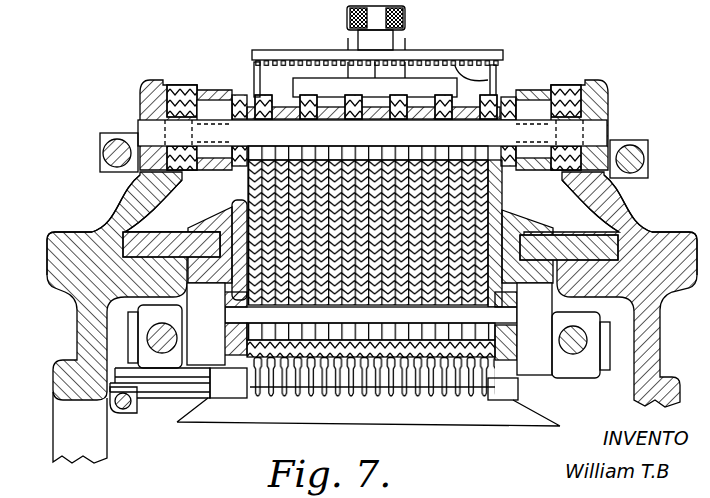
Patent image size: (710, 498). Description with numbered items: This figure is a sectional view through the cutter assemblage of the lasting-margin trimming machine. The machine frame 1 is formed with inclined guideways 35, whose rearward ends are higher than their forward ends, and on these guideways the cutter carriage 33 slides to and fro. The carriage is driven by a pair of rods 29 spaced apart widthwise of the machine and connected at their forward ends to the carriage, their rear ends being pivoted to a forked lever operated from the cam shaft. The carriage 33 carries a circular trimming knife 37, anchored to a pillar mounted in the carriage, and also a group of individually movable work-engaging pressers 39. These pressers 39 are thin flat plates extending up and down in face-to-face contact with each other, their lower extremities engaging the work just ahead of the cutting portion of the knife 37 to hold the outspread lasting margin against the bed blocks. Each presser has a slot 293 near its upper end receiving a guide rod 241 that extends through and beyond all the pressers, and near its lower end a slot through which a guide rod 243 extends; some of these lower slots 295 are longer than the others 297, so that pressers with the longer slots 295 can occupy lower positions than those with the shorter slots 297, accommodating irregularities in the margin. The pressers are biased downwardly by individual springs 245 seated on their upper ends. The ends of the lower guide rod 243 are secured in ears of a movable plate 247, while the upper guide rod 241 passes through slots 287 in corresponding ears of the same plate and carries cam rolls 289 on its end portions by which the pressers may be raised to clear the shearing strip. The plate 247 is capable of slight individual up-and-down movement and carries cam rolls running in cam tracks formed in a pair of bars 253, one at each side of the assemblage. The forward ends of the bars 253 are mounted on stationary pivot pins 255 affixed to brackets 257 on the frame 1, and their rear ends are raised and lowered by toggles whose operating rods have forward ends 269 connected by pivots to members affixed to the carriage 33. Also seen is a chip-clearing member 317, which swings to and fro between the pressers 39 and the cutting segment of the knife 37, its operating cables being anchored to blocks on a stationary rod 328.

The frame 1 is at (80, 321).
The rods 29 is at (162, 355).
The cutter carriage 33 is at (198, 220).
The guideways 35 is at (118, 224).
The circular knife 37 is at (505, 422).
The pressers 39 is at (250, 183).
The guide rod 241 is at (353, 130).
The guide rod 243 is at (505, 322).
The springs 245 is at (488, 70).
The movable plate 247 is at (258, 62).
The bars 253 is at (172, 90).
The pivot pins 255 is at (150, 113).
The brackets 257 is at (122, 197).
The forward ends of the operating rods 269 is at (116, 148).
The slots 287 is at (242, 94).
The cam rolls 289 is at (212, 98).
The slot 293 is at (283, 113).
The longer slots 295 is at (300, 345).
The shorter slots 297 is at (432, 390).
The chip-clearing member 317 is at (345, 400).
The stationary rod 328 is at (125, 411).